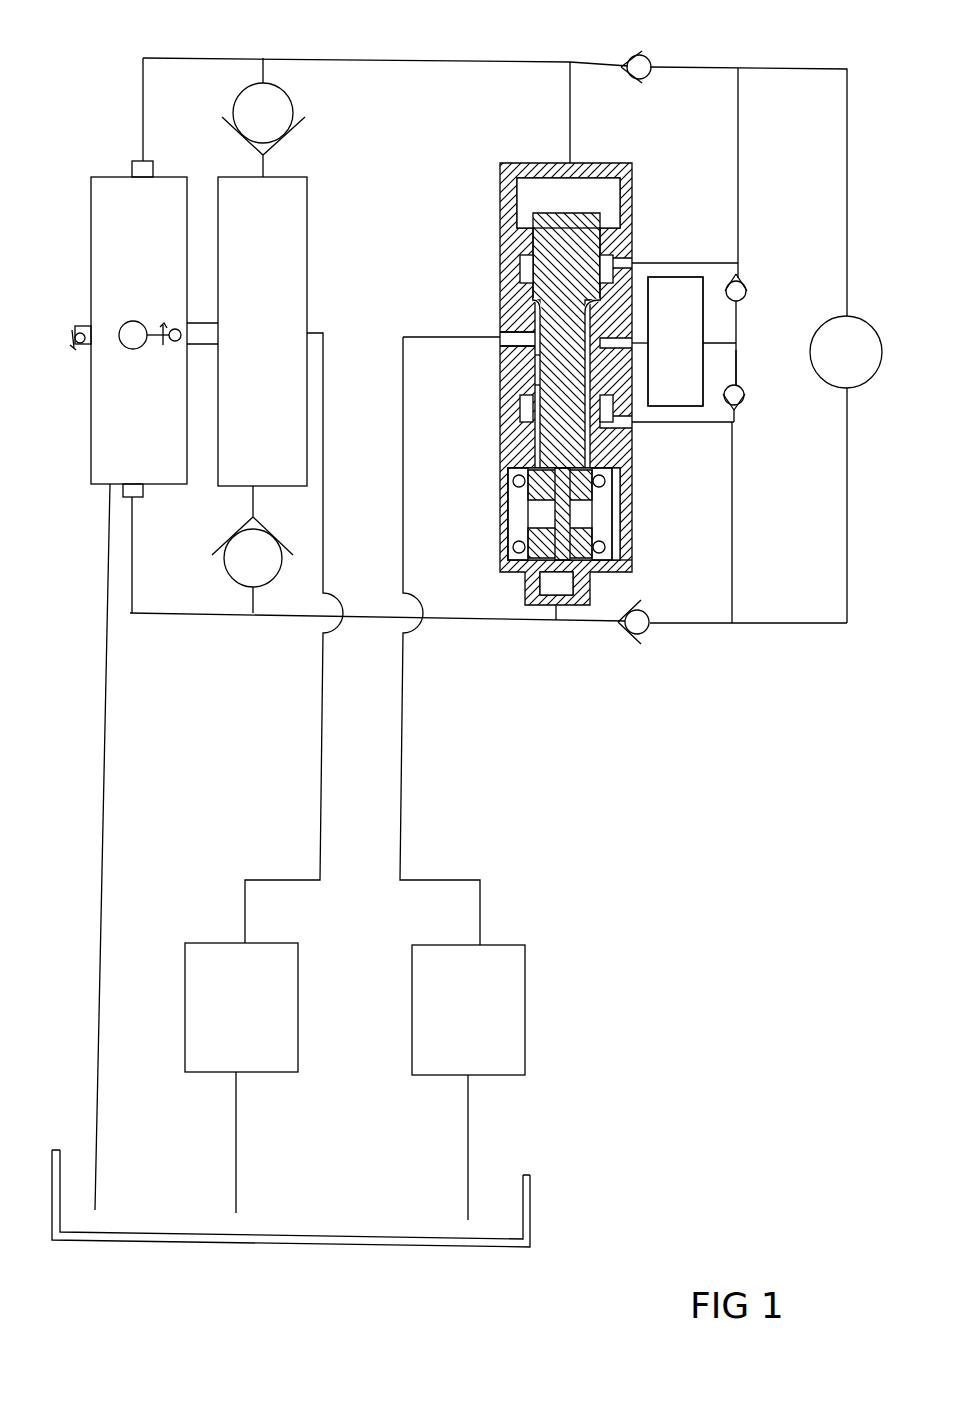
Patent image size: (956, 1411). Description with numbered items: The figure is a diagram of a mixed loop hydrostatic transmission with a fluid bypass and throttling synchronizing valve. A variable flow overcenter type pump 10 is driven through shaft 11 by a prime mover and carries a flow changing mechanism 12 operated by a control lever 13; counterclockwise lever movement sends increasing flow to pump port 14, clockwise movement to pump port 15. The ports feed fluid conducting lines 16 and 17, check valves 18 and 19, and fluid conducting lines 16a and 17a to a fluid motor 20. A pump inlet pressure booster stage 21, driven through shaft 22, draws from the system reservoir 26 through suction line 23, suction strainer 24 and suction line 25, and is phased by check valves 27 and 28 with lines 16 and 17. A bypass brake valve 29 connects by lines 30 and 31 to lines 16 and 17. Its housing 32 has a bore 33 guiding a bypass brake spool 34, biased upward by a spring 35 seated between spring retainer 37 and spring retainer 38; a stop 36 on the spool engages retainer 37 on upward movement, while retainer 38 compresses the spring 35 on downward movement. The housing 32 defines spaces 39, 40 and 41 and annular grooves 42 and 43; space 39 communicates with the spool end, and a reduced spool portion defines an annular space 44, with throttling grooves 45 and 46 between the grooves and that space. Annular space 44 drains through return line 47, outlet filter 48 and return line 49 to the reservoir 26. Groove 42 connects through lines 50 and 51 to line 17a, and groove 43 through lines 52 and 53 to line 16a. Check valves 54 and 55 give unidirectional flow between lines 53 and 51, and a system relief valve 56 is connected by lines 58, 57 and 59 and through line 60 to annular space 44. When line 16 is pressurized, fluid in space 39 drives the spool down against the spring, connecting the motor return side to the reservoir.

The variable flow overcenter type pump 10 is at (148, 260).
The shaft 11 is at (78, 326).
The flow changing mechanism 12 is at (128, 326).
The control lever 13 is at (174, 328).
The pump port 14 is at (145, 170).
The pump port 15 is at (140, 494).
The fluid conducting line 16 is at (440, 60).
The fluid conducting line 16a is at (793, 66).
The fluid conducting line 17 is at (488, 626).
The fluid conducting line 17a is at (782, 628).
The check valve 18 is at (660, 58).
The check valve 19 is at (646, 630).
The fluid motor 20 is at (854, 366).
The pump inlet pressure booster stage 21 is at (270, 314).
The shaft 22 is at (200, 352).
The suction line 23 is at (328, 580).
The suction strainer 24 is at (246, 1025).
The suction line 25 is at (240, 1180).
The system reservoir 26 is at (312, 1245).
The check valve 27 is at (282, 110).
The check valve 28 is at (268, 548).
The bypass brake valve 29 is at (560, 368).
The line 30 is at (574, 122).
The line 31 is at (560, 628).
The housing 32 is at (636, 192).
The bore 33 is at (525, 332).
The bypass brake spool 34 is at (535, 228).
The spring 35 is at (612, 532).
The stop 36 is at (600, 584).
The spring retainer 37 is at (606, 552).
The spring retainer 38 is at (605, 484).
The space 39 is at (572, 206).
The space 40 is at (540, 516).
The space 41 is at (545, 592).
The annular groove 42 is at (522, 406).
The annular groove 43 is at (520, 265).
The annular space 44 is at (532, 354).
The throttling groove 45 is at (532, 382).
The throttling groove 46 is at (530, 305).
The return line 47 is at (403, 478).
The outlet filter 48 is at (484, 1027).
The return line 49 is at (472, 1162).
The line 50 is at (676, 424).
The line 51 is at (736, 546).
The line 52 is at (676, 262).
The line 53 is at (742, 166).
The check valve 54 is at (746, 288).
The check valve 55 is at (745, 394).
The system relief valve 56 is at (684, 364).
The line 57 is at (742, 340).
The line 58 is at (742, 370).
The line 59 is at (724, 340).
The line 60 is at (652, 332).